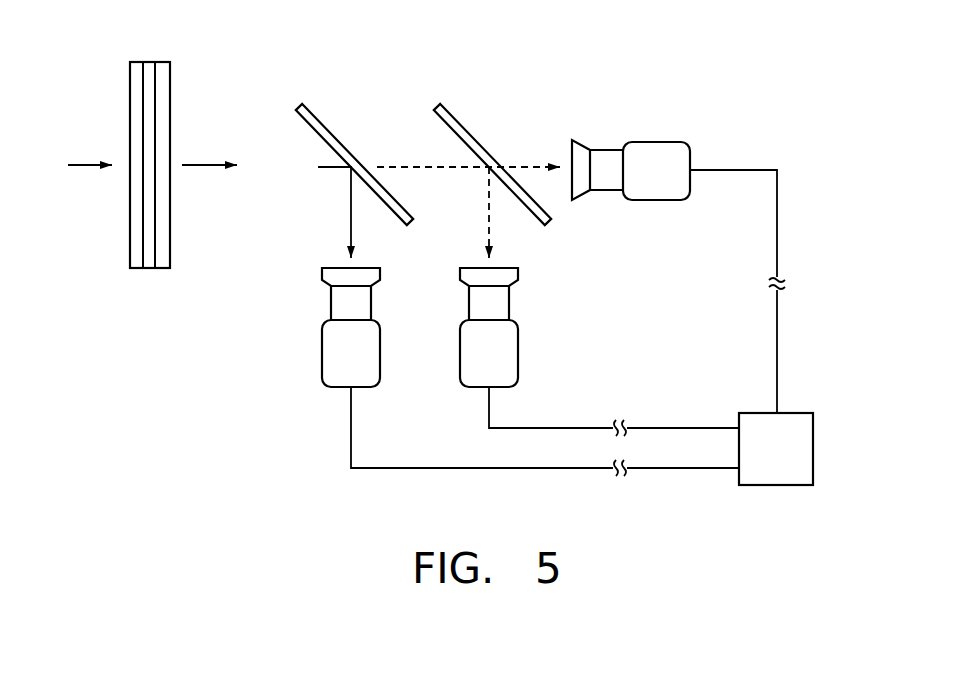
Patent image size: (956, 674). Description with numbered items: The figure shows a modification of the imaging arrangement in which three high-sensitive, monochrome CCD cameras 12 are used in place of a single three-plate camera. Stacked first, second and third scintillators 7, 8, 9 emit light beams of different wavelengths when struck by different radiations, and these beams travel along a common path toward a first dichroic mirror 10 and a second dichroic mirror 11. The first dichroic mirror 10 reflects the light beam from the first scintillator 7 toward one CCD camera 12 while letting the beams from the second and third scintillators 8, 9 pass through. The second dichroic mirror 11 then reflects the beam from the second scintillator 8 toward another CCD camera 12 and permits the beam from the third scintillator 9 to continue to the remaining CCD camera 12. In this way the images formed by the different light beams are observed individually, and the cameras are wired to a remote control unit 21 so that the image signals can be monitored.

The first scintillator 7 is at (130, 253).
The second scintillator 8 is at (148, 62).
The third scintillator 9 is at (170, 257).
The first dichroic mirror 10 is at (320, 122).
The second dichroic mirror 11 is at (457, 120).
The CCD camera 12 is at (667, 142).
The remote control unit 21 is at (815, 438).